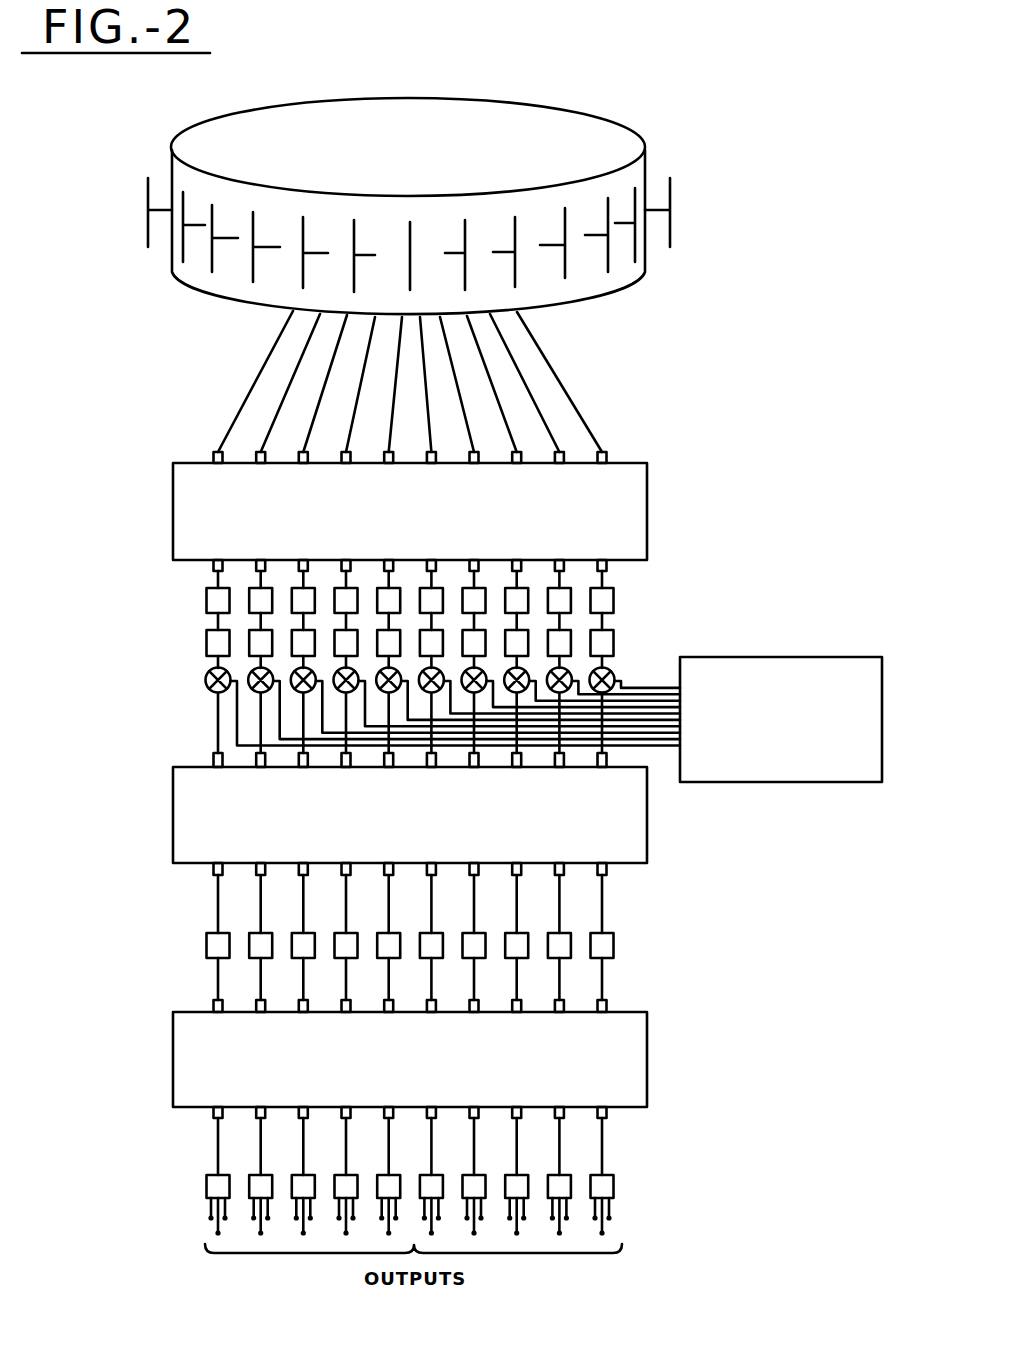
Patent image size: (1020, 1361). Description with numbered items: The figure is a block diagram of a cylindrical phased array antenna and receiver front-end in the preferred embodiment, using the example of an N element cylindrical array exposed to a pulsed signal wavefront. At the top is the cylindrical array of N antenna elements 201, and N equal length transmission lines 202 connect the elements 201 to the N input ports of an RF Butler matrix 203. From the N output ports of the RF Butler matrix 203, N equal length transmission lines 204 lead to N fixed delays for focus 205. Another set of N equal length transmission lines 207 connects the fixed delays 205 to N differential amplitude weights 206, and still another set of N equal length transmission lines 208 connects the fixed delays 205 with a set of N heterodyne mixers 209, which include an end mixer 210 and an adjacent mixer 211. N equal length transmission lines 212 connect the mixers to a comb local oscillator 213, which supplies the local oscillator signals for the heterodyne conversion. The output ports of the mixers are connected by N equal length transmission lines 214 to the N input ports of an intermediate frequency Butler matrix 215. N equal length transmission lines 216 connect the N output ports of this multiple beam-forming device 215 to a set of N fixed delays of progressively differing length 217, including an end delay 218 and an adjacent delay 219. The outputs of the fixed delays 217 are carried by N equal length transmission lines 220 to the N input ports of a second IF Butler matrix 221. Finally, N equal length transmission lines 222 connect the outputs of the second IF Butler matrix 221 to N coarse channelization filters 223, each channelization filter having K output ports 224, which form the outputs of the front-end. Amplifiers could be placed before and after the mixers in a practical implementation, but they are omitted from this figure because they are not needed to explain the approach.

The cylindrical array of N antenna elements 201 is at (148, 216).
The equal length transmission lines 202 is at (255, 392).
The RF Butler matrix 203 is at (173, 500).
The equal length transmission lines 204 is at (213, 578).
The fixed delays for focus 205 is at (207, 603).
The differential amplitude weights 206 is at (207, 645).
The equal length transmission lines 207 is at (207, 624).
The equal length transmission lines 208 is at (408, 659).
The heterodyne mixers 209 is at (612, 668).
The end mixer 210 is at (215, 693).
The adjacent mixer 211 is at (432, 754).
The equal length transmission lines 212 is at (660, 748).
The comb local oscillator 213 is at (763, 657).
The equal length transmission lines 214 is at (215, 751).
The intermediate frequency (IF) Butler matrix 215 is at (173, 803).
The equal length transmission lines 216 is at (218, 900).
The fixed delays of progressively differing length 217 is at (612, 942).
The end delay 218 is at (414, 945).
The adjacent delay 219 is at (248, 952).
The equal length transmission lines 220 is at (218, 985).
The second IF Butler matrix 221 is at (173, 1052).
The equal length transmission lines 222 is at (218, 1140).
The coarse channelization filters 223 is at (207, 1188).
The output ports 224 is at (210, 1218).